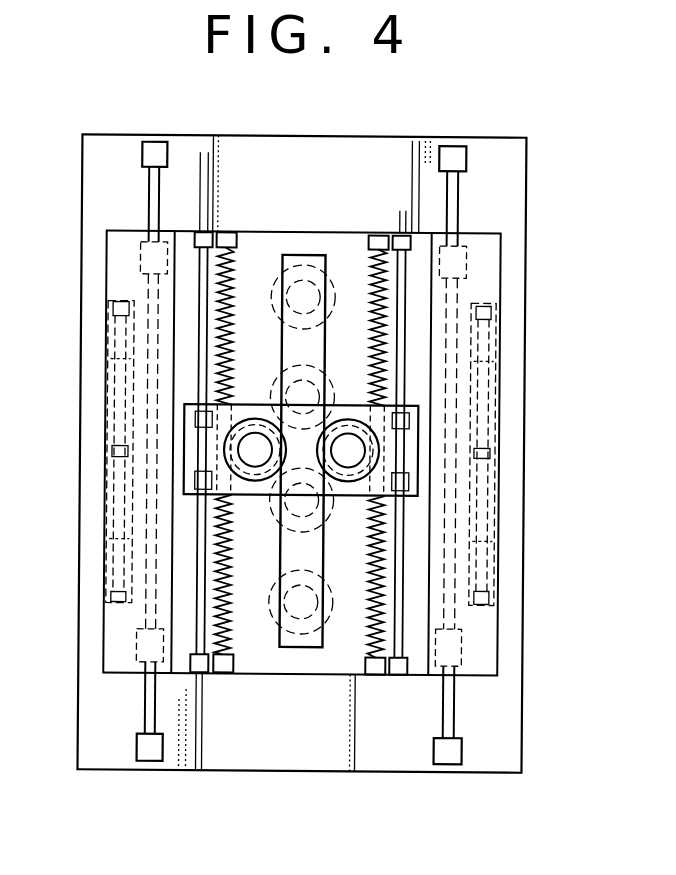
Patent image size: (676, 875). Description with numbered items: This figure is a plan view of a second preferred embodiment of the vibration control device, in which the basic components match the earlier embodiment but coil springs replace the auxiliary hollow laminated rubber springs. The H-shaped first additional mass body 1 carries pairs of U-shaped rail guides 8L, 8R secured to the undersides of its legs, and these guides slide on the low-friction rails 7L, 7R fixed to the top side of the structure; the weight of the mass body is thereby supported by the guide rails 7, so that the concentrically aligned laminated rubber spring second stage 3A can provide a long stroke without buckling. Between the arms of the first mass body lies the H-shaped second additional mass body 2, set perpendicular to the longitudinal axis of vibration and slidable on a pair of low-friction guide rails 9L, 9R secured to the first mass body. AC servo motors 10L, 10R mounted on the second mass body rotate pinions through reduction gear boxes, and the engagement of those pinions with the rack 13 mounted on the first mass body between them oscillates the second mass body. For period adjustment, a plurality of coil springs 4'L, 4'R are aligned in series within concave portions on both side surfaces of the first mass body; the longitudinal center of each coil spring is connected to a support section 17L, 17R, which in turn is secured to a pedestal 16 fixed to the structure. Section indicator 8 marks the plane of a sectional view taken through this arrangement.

The first additional mass body 1 is at (256, 250).
The second additional mass body 2 is at (185, 414).
The laminated rubber spring second stage 3A is at (320, 322).
The coil springs 4'L is at (78, 451).
The coil springs 4'R is at (529, 454).
The guide rails 7 is at (37, 447).
The section line 8- 8 is at (303, 110).
The rail 7L is at (147, 196).
The rail 7R is at (456, 705).
The rail guide 8L is at (140, 648).
The rail guide 8R is at (499, 268).
The guide rail 9L is at (198, 573).
The guide rail 9R is at (410, 658).
The AC servo motor 10L is at (250, 432).
The AC servo motor 10R is at (347, 482).
The rack 13 is at (297, 254).
The pedestal 16 is at (516, 186).
The support section 17L is at (113, 452).
The support section 17R is at (489, 455).